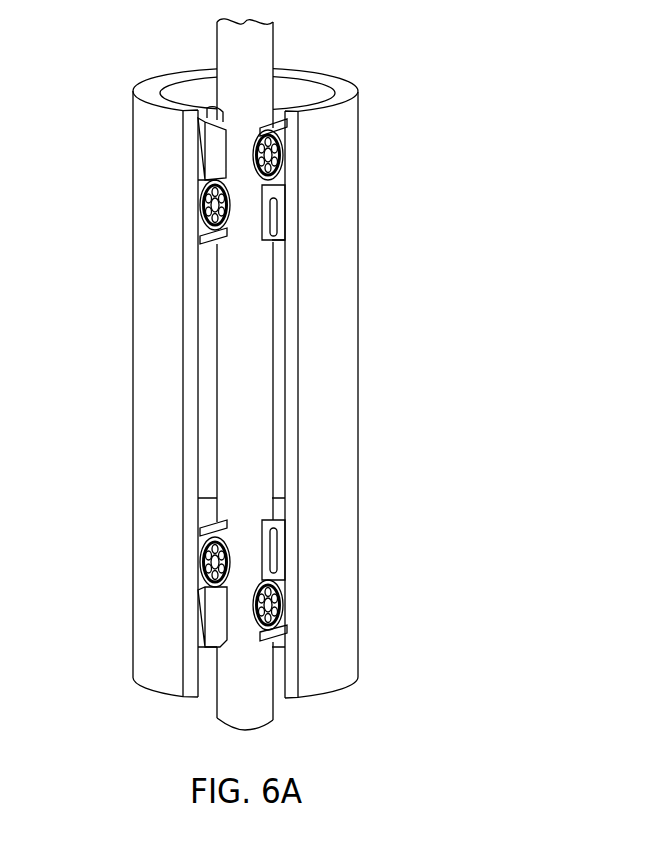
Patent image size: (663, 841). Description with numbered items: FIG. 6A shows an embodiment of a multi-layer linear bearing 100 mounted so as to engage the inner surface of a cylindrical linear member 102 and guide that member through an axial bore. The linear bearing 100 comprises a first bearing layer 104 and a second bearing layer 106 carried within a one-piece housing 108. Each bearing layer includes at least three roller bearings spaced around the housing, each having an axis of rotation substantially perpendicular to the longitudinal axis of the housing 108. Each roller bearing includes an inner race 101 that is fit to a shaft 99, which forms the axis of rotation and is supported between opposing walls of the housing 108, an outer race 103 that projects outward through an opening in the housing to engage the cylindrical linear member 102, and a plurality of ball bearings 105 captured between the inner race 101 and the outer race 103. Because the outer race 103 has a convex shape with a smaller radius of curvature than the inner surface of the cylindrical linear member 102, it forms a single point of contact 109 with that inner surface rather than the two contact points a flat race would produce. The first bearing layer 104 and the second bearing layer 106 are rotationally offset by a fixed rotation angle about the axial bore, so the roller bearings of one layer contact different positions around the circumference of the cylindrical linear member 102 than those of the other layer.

The shaft 99 is at (274, 38).
The linear bearing 100 is at (302, 96).
The inner race 101 is at (228, 203).
The cylindrical linear member 102 is at (142, 62).
The outer race 103 is at (202, 187).
The first bearing layer 104 is at (293, 158).
The ball bearings 105 is at (202, 210).
The second bearing layer 106 is at (228, 214).
The one-piece housing 108 is at (208, 525).
The single point of contact 109 is at (208, 597).